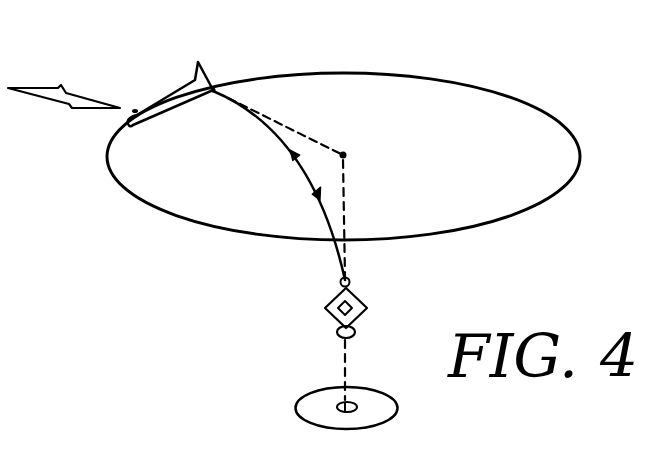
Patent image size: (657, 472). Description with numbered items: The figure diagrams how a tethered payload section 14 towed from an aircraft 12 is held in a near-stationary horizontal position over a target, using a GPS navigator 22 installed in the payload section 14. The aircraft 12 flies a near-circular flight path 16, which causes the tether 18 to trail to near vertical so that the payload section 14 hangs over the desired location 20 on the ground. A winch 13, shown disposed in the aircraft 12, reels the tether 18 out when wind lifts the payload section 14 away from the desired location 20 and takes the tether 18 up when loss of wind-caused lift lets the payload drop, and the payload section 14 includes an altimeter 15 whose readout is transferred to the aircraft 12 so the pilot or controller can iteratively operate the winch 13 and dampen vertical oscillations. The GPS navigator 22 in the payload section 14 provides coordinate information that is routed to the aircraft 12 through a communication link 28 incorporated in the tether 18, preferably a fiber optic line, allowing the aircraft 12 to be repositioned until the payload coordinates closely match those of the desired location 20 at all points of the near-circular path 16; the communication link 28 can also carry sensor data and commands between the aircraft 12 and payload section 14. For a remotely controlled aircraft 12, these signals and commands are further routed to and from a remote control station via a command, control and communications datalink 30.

The command, control and communications datalink 30 is at (61, 88).
The aircraft 12 is at (160, 102).
The winch 13 is at (213, 89).
The near-circular flight path 16 is at (555, 118).
The tether 18 is at (270, 128).
The communication link 28 is at (316, 192).
The payload section 14 is at (328, 303).
The GPS navigator 22 is at (355, 319).
The altimeter 15 is at (338, 335).
The desired location 20 is at (340, 405).